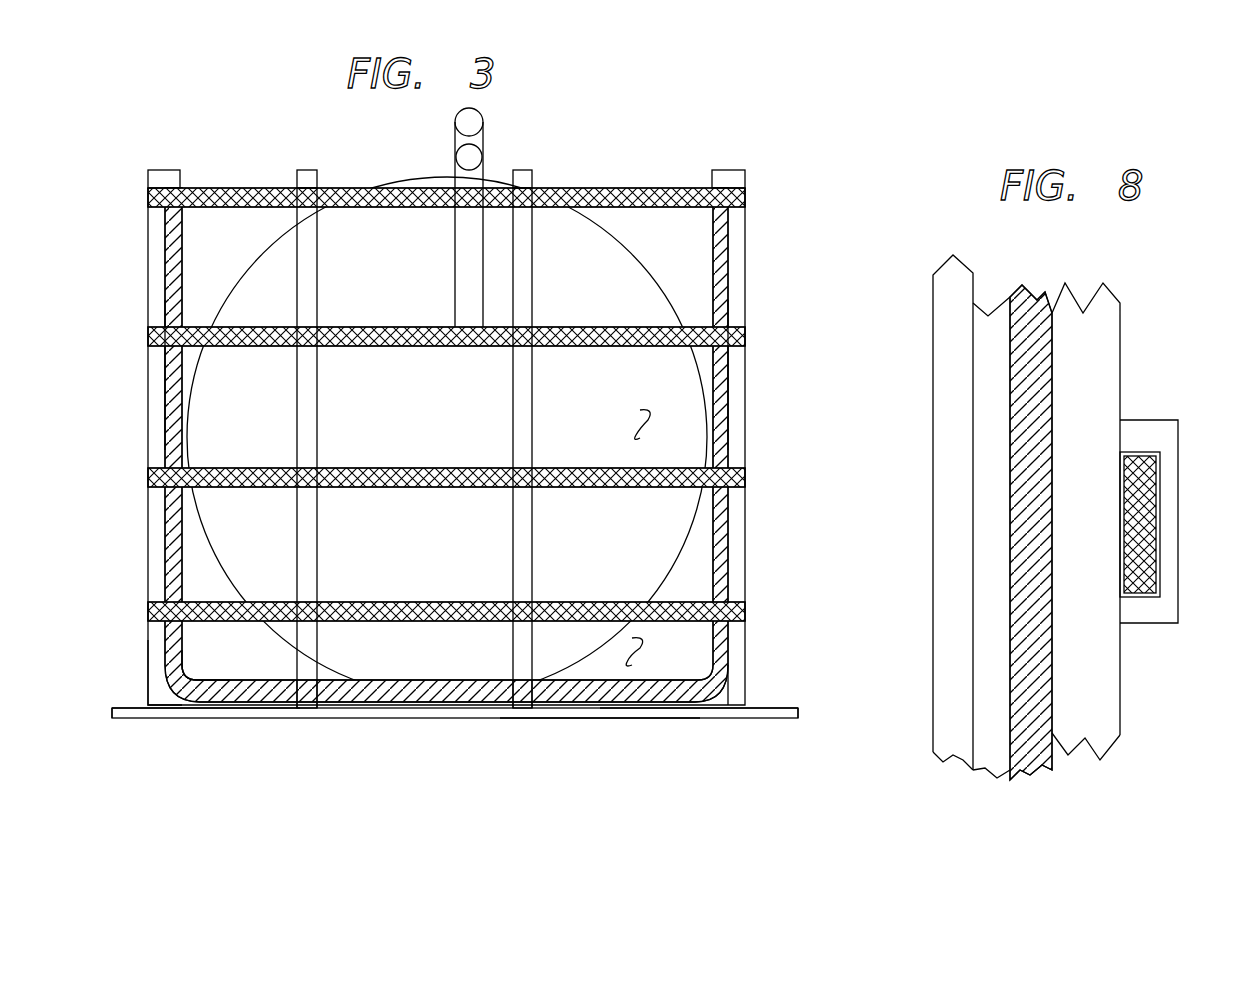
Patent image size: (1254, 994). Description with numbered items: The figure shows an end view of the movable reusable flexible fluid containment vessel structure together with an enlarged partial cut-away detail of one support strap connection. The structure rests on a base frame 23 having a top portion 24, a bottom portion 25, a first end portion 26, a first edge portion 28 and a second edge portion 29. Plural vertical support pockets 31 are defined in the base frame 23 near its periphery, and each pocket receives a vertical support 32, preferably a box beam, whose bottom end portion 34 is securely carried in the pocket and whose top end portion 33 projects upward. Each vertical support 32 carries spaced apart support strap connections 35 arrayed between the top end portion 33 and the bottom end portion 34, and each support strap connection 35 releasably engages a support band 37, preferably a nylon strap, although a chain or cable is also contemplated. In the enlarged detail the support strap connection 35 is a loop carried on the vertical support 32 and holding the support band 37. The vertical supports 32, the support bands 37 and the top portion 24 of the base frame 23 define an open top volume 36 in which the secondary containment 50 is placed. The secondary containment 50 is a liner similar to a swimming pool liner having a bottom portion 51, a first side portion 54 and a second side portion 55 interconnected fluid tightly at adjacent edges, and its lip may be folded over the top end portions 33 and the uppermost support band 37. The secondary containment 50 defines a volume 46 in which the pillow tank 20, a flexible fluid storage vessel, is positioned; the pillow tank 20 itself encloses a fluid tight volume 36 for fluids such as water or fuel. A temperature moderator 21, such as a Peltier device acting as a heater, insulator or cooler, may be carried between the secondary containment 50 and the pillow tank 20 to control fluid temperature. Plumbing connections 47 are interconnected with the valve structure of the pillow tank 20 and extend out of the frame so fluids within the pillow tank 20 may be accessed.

In FIG. 3, the pillow tank 20 is at (236, 540).
In FIG. 8, the pillow tank 20 is at (946, 300).
In FIG. 8, the temperature moderator 21 is at (998, 750).
In FIG. 3, the base frame 23 is at (352, 720).
In FIG. 3, the top portion 24 is at (660, 718).
In FIG. 3, the bottom portion 25 is at (182, 718).
In FIG. 3, the first end portion 26 is at (614, 718).
In FIG. 3, the first edge portion 28 is at (790, 718).
In FIG. 3, the second edge portion 29 is at (108, 718).
In FIG. 3, the vertical support pocket 31 is at (740, 690).
In FIG. 3, the vertical support 32 is at (745, 218).
In FIG. 8, the vertical support 32 is at (1088, 693).
In FIG. 3, the top end portion 33 is at (162, 178).
In FIG. 3, the bottom end portion 34 is at (150, 655).
In FIG. 3, the support strap connection 35 is at (520, 327).
In FIG. 8, the support strap connection 35 is at (1148, 430).
In FIG. 3, the volume 36 is at (632, 415).
In FIG. 3, the support band 37 is at (630, 192).
In FIG. 8, the support band 37 is at (1158, 497).
In FIG. 3, the volume 46 is at (644, 652).
In FIG. 3, the plumbing connection 47 is at (469, 157).
In FIG. 3, the secondary containment 50 is at (150, 262).
In FIG. 8, the secondary containment 50 is at (1030, 293).
In FIG. 3, the bottom portion 51 is at (222, 680).
In FIG. 3, the first side portion 54 is at (735, 375).
In FIG. 3, the second side portion 55 is at (170, 437).